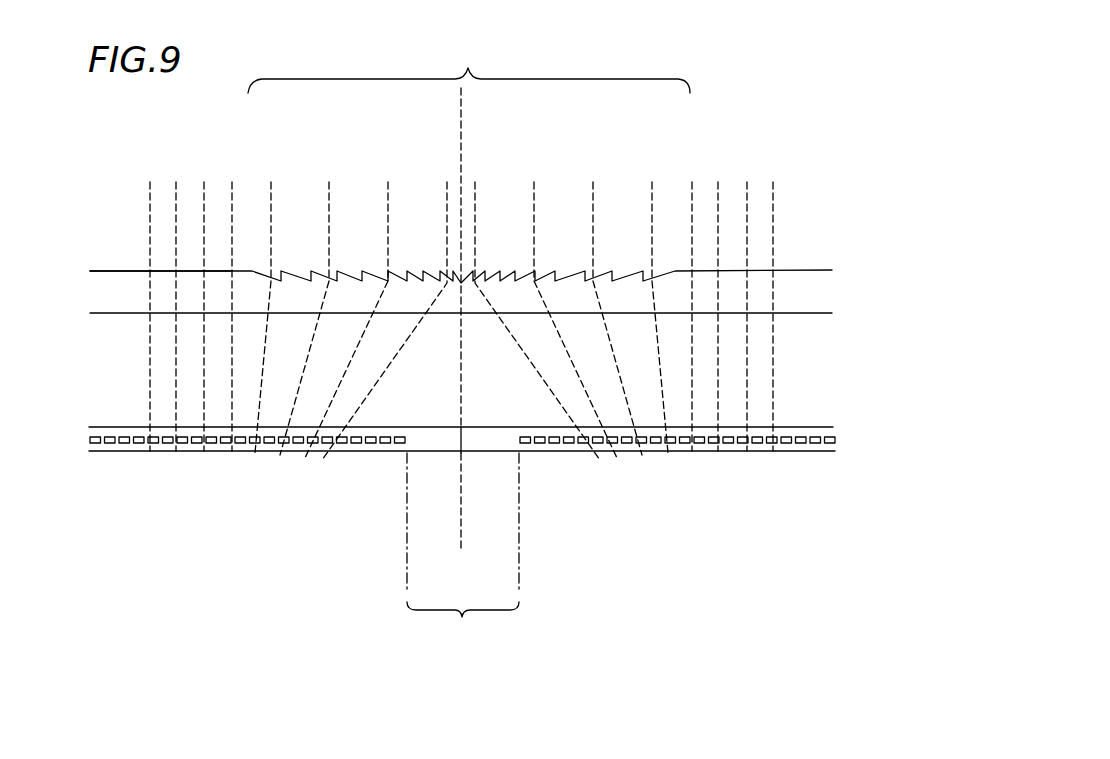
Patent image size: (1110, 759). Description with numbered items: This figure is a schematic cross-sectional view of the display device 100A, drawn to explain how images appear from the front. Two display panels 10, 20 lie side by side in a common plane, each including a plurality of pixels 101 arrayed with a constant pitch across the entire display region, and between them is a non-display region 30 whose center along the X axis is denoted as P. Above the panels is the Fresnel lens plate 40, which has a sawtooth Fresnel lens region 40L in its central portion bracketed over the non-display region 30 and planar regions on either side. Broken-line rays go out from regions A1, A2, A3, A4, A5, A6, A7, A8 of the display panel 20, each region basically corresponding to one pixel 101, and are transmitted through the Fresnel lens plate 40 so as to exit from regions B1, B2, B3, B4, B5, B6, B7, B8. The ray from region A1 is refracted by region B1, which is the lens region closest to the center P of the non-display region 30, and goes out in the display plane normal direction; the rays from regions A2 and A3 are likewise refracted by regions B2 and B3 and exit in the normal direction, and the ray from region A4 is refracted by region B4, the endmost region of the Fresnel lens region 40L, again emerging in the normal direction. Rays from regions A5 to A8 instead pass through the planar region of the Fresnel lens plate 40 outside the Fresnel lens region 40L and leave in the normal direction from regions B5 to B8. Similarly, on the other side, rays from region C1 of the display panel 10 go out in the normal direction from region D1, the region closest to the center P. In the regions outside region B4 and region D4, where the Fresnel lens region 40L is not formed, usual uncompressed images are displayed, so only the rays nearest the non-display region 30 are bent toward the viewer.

The display device 100A is at (810, 137).
The Fresnel lens plate 40 is at (800, 277).
The Fresnel lens region 40L is at (469, 67).
The display panel 10 is at (833, 432).
The display panel 20 is at (89, 429).
The non-display region 30 is at (463, 550).
The pixel 101 is at (800, 443).
The center of the non-display region P is at (463, 455).
The region of the display panel 10 C1 is at (593, 443).
The region of the display panel 20 A1 is at (328, 452).
The region of the display panel 20 A2 is at (307, 452).
The region of the display panel 20 A3 is at (283, 452).
The region of the display panel 20 A4 is at (255, 452).
The region of the display panel 20 A5 is at (232, 452).
The region of the display panel 20 A6 is at (205, 452).
The region of the display panel 20 A7 is at (176, 452).
The region of the display panel 20 A8 is at (151, 452).
The region of the Fresnel lens plate B1 is at (447, 272).
The region of the Fresnel lens plate B2 is at (388, 279).
The region of the Fresnel lens plate B3 is at (328, 279).
The endmost region of the Fresnel lens region B4 is at (272, 279).
The region of the Fresnel lens plate B5 is at (232, 271).
The region of the Fresnel lens plate B6 is at (204, 271).
The region of the Fresnel lens plate B7 is at (176, 271).
The region of the Fresnel lens plate B8 is at (150, 271).
The region of the Fresnel lens plate D1 is at (476, 272).
The region of the Fresnel lens plate D4 is at (655, 277).